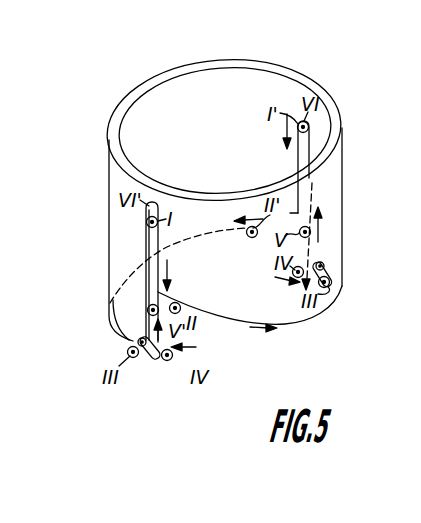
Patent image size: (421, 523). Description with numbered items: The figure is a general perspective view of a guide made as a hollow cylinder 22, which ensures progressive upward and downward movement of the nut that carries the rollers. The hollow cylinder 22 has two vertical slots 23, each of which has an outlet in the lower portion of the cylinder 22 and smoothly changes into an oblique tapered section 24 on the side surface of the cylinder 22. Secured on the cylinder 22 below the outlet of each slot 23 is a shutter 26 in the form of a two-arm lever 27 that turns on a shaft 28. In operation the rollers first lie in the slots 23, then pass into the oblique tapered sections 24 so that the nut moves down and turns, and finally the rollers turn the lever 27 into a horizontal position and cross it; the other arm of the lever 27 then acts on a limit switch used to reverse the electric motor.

The hollow cylinder 22 is at (109, 236).
The vertical slot 23 is at (162, 248).
The oblique tapered section 24 is at (220, 321).
The shutter 26 is at (318, 262).
The two-arm lever 27 is at (152, 362).
The shaft 28 is at (128, 338).